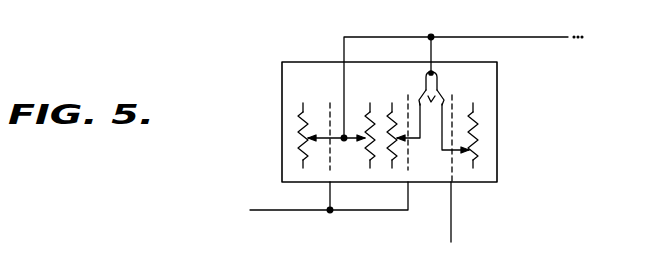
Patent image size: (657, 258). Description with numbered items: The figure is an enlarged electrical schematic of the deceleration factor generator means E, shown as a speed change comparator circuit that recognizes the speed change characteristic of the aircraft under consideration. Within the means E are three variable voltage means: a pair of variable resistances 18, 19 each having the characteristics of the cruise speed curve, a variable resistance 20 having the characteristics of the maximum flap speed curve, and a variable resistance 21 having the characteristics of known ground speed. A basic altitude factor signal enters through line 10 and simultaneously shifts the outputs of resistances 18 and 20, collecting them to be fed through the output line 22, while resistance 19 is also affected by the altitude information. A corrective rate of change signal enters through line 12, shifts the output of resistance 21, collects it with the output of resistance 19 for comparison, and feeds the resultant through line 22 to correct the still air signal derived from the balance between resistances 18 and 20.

The line 10 is at (272, 210).
The line 12 is at (451, 221).
The variable resistance 18 is at (368, 111).
The variable resistance 19 is at (393, 108).
The variable resistance 20 is at (303, 123).
The variable resistance 21 is at (473, 125).
The output line 22 is at (540, 38).
The deceleration factor generator means E is at (244, 151).